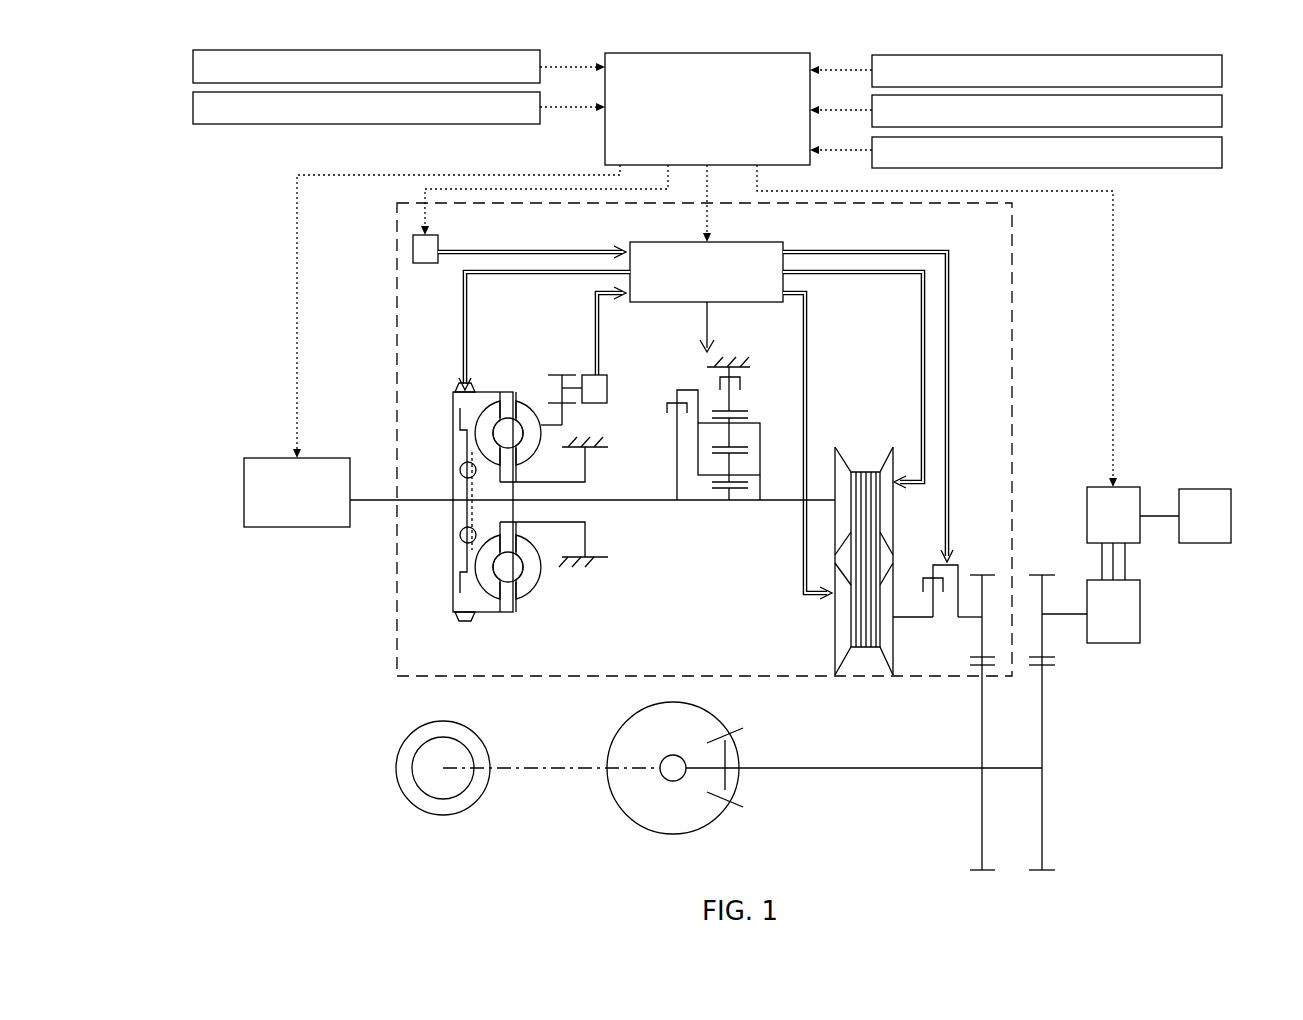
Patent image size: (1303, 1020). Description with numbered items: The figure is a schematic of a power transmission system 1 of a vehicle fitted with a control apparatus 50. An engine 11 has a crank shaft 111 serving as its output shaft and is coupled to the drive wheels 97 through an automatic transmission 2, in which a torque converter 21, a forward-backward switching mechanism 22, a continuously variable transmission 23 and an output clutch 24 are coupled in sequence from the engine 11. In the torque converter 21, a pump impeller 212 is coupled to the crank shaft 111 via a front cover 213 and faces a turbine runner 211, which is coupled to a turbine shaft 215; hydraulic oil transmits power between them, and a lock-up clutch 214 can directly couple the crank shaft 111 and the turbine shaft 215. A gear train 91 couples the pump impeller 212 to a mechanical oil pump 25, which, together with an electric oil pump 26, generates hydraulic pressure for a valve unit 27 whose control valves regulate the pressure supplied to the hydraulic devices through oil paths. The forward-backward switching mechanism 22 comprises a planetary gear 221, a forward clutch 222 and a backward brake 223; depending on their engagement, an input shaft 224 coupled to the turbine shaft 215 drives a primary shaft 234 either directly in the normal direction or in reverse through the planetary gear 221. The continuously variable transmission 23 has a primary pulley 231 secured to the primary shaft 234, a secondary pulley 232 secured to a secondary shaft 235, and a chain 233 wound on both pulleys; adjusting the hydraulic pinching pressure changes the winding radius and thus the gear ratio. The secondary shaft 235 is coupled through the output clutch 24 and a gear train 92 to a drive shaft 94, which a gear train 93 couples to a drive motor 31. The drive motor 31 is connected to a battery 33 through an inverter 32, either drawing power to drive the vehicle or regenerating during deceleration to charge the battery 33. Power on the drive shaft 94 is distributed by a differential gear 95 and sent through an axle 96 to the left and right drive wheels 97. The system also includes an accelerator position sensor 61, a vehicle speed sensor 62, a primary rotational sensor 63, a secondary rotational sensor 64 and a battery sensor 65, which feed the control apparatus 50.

The power transmission system 1 is at (49, 46).
The automatic transmission 2 is at (1012, 237).
The engine 11 is at (300, 528).
The crank shaft 111 is at (377, 502).
The torque converter 21 is at (508, 473).
The turbine runner 211 is at (481, 392).
The pump impeller 212 is at (524, 394).
The front cover 213 is at (456, 600).
The lock-up clutch 214 is at (486, 603).
The turbine shaft 215 is at (553, 503).
The forward-backward switching mechanism 22 is at (717, 433).
The planetary gear 221 is at (762, 442).
The forward clutch 222 is at (672, 400).
The backward brake 223 is at (742, 383).
The input shaft 224 is at (702, 505).
The continuously variable transmission 23 is at (872, 506).
The primary pulley 231 is at (901, 446).
The secondary pulley 232 is at (835, 632).
The chain 233 is at (864, 472).
The primary shaft 234 is at (779, 505).
The secondary shaft 235 is at (920, 620).
The output clutch 24 is at (926, 576).
The mechanical oil pump 25 is at (600, 373).
The electric oil pump 26 is at (432, 265).
The valve unit 27 is at (735, 240).
The drive motor 31 is at (1113, 645).
The inverter 32 is at (1133, 485).
The battery 33 is at (1206, 487).
The control apparatus 50 is at (710, 53).
The accelerator position sensor 61 is at (193, 66).
The vehicle speed sensor 62 is at (193, 106).
The primary rotational sensor 63 is at (1222, 70).
The secondary rotational sensor 64 is at (1222, 110).
The battery sensor 65 is at (1222, 150).
The gear train 91 is at (563, 370).
The gear train 92 is at (980, 558).
The gear train 93 is at (1040, 558).
The drive shaft 94 is at (830, 771).
The differential gear 95 is at (660, 820).
The axle 96 is at (668, 780).
The drive wheels 97 is at (444, 806).